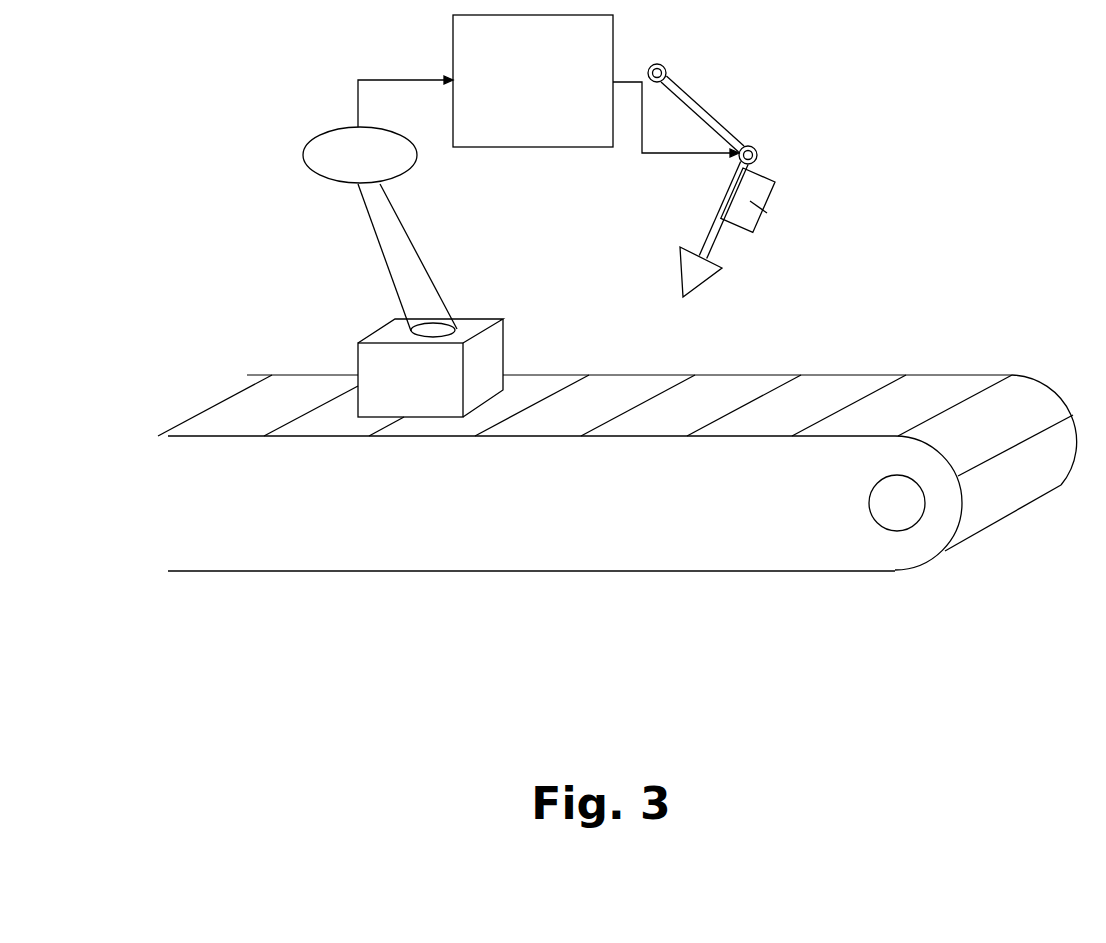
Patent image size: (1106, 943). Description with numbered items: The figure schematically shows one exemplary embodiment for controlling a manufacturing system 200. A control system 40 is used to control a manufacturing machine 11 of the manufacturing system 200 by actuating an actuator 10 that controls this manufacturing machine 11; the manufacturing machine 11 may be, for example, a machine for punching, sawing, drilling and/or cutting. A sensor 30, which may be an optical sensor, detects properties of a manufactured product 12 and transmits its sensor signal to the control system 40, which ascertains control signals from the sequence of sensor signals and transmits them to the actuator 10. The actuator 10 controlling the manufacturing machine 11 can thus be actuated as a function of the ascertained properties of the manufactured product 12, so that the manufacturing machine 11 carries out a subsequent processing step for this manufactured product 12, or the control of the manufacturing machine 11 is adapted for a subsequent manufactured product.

The control system 40 is at (445, 23).
The sensor 30 is at (302, 161).
The manufacturing machine 11 is at (720, 122).
The actuator 10 is at (775, 195).
The manufactured product 12 is at (510, 349).
The manufacturing system 200 is at (519, 575).